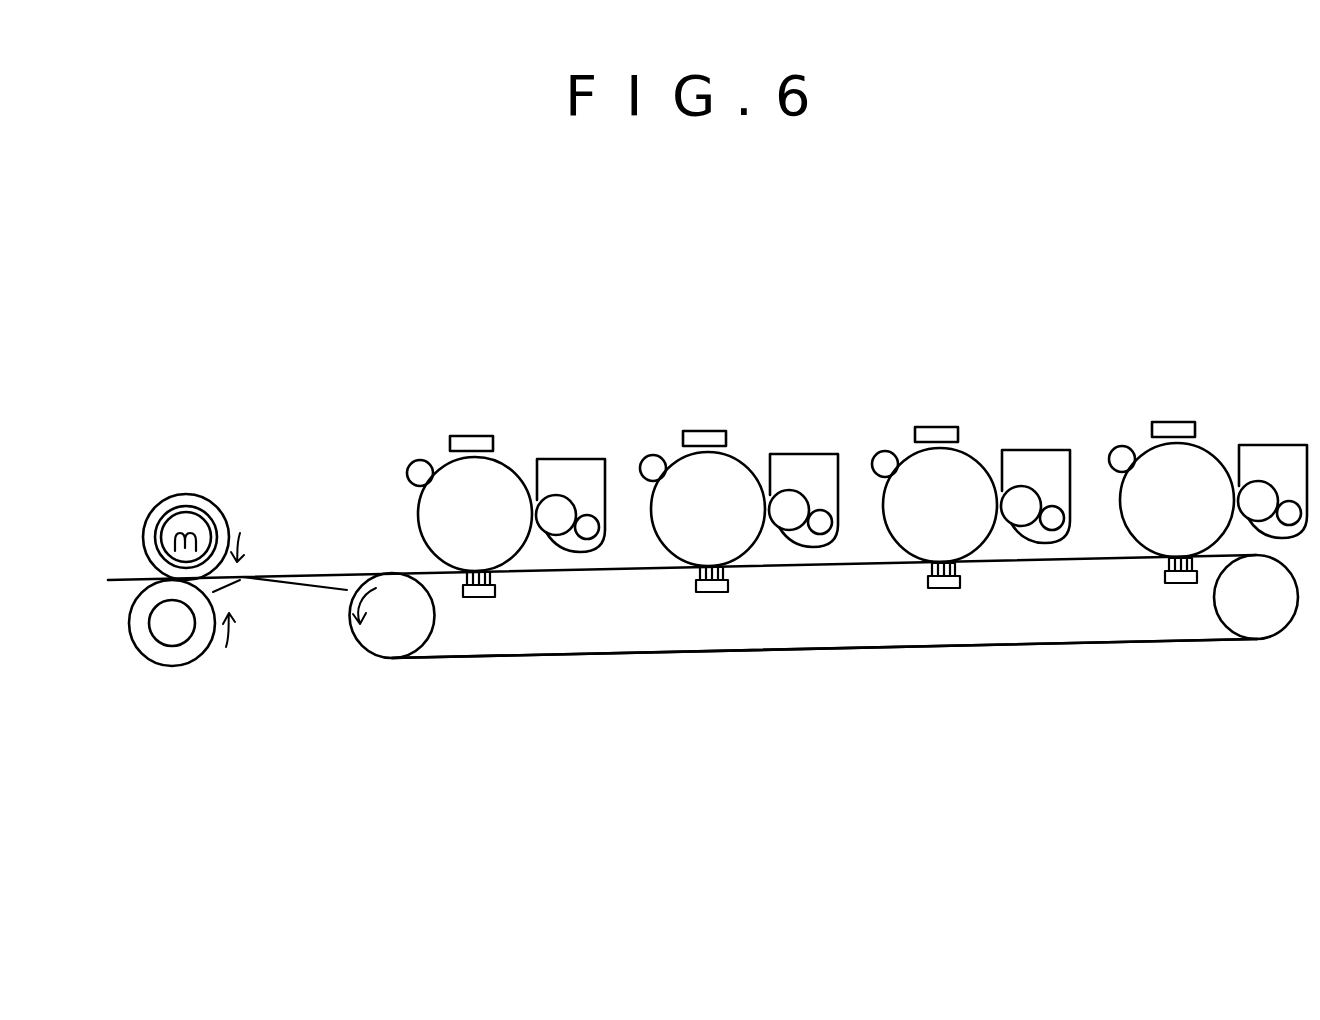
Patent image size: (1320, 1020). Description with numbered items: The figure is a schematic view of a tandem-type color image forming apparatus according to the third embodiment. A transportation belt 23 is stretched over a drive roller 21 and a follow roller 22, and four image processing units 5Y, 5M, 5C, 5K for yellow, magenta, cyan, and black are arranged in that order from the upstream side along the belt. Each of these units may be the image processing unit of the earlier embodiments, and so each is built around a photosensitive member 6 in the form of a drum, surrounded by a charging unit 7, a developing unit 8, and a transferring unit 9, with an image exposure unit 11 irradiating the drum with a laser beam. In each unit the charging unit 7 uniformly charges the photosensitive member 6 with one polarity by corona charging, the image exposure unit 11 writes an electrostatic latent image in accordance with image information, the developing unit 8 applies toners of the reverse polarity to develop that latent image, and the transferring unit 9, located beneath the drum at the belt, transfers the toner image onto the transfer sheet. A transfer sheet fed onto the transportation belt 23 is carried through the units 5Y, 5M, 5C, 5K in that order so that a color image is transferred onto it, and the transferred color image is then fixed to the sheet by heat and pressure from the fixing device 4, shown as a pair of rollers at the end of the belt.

The fixing unit 4 is at (165, 494).
The image processing unit for black 5K is at (440, 378).
The image processing unit for cyan 5C is at (679, 387).
The image processing unit for magenta 5M is at (910, 377).
The image processing unit for yellow 5Y is at (1145, 385).
The photosensitive member 6 is at (506, 458).
The charging unit 7 is at (407, 462).
The developing unit 8 is at (570, 459).
The transferring unit 9 is at (483, 597).
The image exposure unit 11 is at (462, 436).
The drive roller 21 is at (395, 643).
The follow roller 22 is at (1267, 605).
The transportation belt 23 is at (1080, 646).